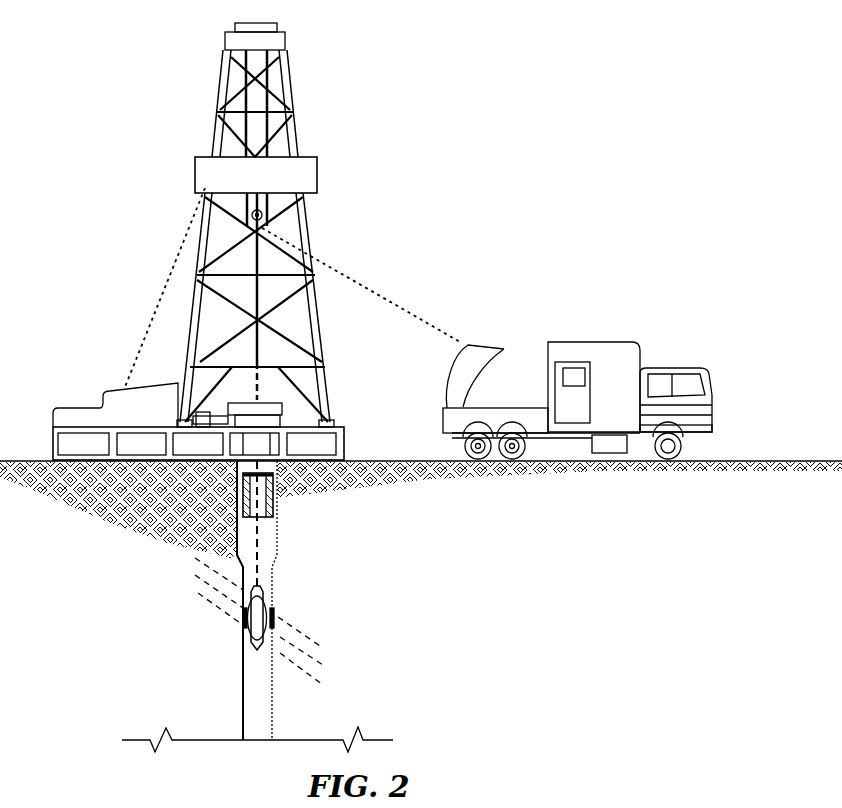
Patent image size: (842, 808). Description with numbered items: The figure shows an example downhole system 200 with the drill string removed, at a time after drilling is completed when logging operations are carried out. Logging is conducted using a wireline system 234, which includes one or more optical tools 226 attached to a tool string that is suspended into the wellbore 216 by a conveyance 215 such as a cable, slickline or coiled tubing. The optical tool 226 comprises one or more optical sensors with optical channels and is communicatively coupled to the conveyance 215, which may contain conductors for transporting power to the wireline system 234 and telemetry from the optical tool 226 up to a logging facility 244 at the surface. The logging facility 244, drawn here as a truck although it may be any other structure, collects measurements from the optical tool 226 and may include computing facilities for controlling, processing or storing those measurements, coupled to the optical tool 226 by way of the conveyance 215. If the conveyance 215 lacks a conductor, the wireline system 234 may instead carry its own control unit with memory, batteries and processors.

The downhole system 200 is at (418, 122).
The conveyance 215 is at (265, 501).
The wellbore 216 is at (270, 547).
The optical tool 226 is at (243, 616).
The wireline system 234 is at (274, 611).
The logging facility 244 is at (571, 341).